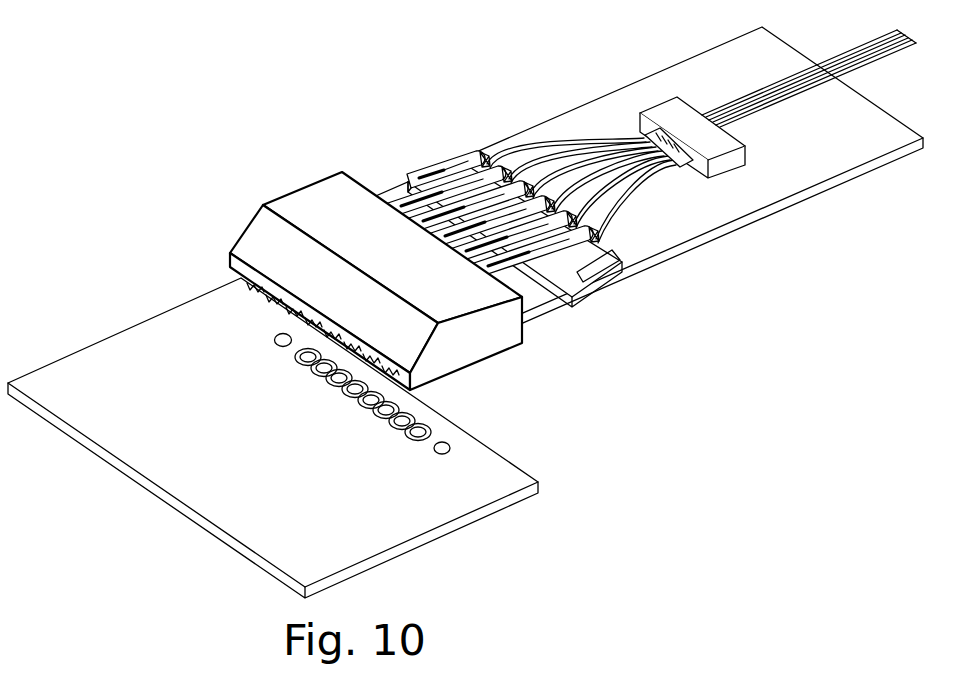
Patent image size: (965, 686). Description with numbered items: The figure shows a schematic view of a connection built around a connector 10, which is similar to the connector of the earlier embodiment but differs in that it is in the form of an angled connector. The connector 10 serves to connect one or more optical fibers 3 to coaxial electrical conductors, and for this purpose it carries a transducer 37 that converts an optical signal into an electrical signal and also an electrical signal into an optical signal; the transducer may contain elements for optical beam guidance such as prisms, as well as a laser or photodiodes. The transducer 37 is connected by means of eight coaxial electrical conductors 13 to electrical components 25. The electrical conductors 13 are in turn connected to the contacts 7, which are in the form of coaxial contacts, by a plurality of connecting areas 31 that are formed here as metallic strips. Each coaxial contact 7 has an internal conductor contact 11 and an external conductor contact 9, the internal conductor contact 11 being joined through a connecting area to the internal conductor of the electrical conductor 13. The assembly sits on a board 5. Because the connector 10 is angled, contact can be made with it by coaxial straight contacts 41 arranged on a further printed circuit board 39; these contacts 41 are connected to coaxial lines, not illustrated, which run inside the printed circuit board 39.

The optical fibers 3 is at (869, 41).
The circuit board 5 is at (748, 82).
The contacts 7 is at (533, 283).
The external conductor contact 9 is at (563, 261).
The connector 10 is at (378, 72).
The internal conductor contact 11 is at (606, 254).
The coaxial electrical conductors 13 is at (587, 170).
The electrical components 25 is at (640, 201).
The connecting area 31 is at (463, 168).
The transducer 37 is at (731, 163).
The further printed circuit board 39 is at (251, 431).
The coaxial straight contacts 41 is at (384, 436).